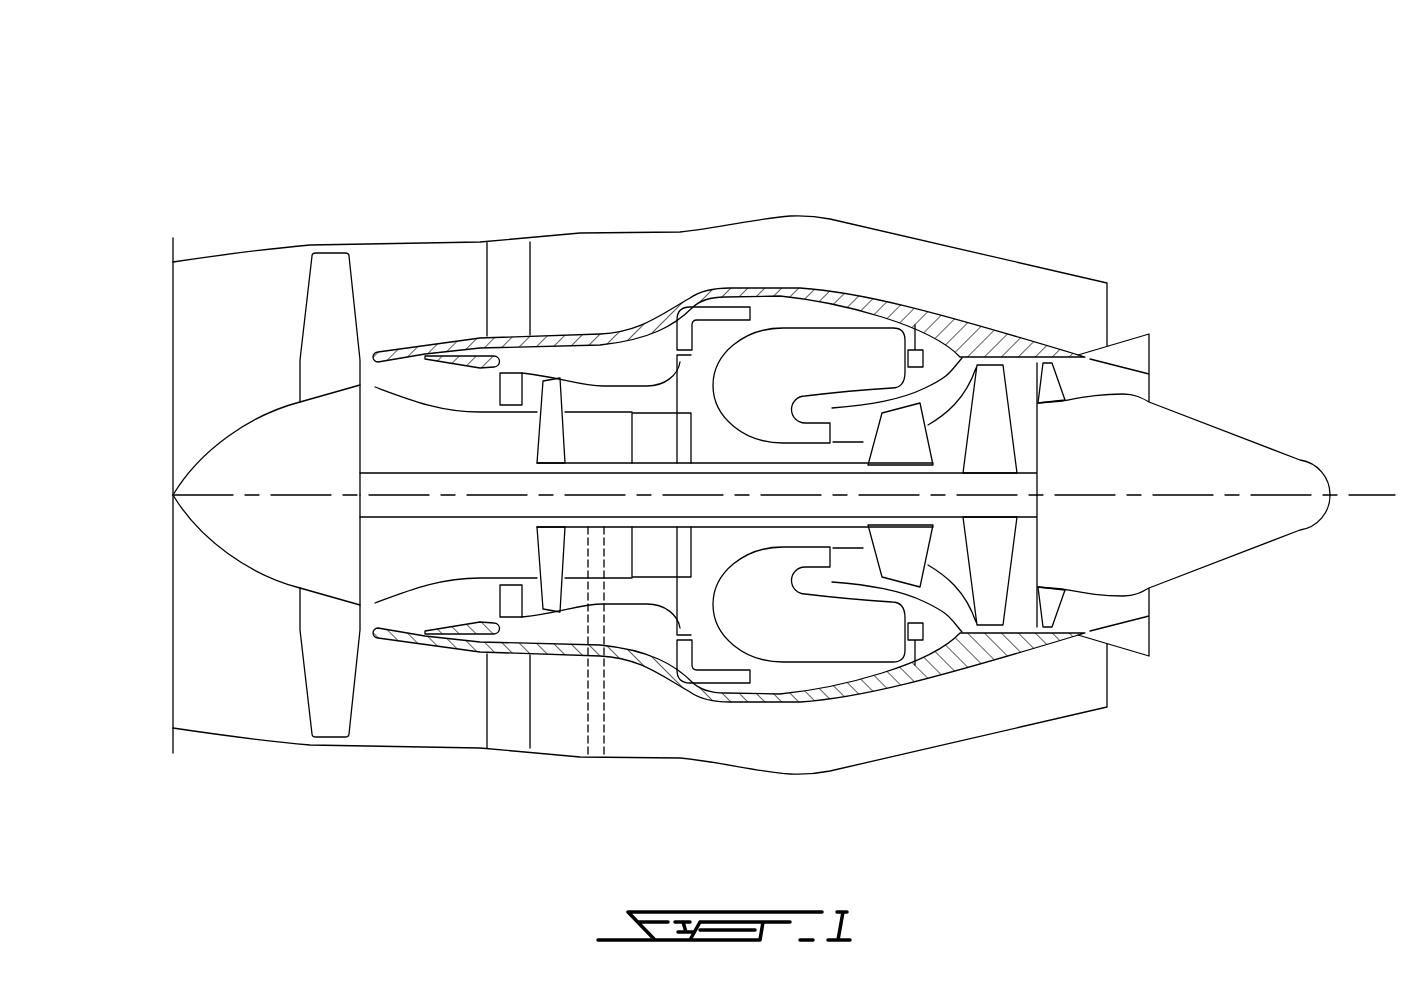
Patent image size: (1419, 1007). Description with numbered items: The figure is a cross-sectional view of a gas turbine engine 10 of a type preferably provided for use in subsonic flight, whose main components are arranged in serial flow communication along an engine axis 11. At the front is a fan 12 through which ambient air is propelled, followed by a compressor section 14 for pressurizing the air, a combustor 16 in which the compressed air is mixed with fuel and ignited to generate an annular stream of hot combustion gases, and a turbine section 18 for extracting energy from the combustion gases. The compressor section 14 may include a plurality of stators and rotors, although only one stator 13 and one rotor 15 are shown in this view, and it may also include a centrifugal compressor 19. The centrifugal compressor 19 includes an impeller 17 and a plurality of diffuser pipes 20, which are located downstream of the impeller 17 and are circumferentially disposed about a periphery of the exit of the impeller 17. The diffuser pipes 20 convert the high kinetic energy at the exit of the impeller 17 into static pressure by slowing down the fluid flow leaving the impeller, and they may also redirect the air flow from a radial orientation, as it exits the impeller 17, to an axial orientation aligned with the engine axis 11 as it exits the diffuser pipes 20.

The gas turbine engine 10 is at (978, 160).
The engine axis 11 is at (1372, 495).
The fan 12 is at (325, 653).
The stator 13 is at (510, 385).
The compressor section 14 is at (613, 402).
The rotor 15 is at (552, 393).
The combustor 16 is at (790, 347).
The impeller 17 is at (660, 422).
The turbine section 18 is at (943, 577).
The centrifugal compressor 19 is at (705, 150).
The diffuser pipes 20 is at (723, 310).